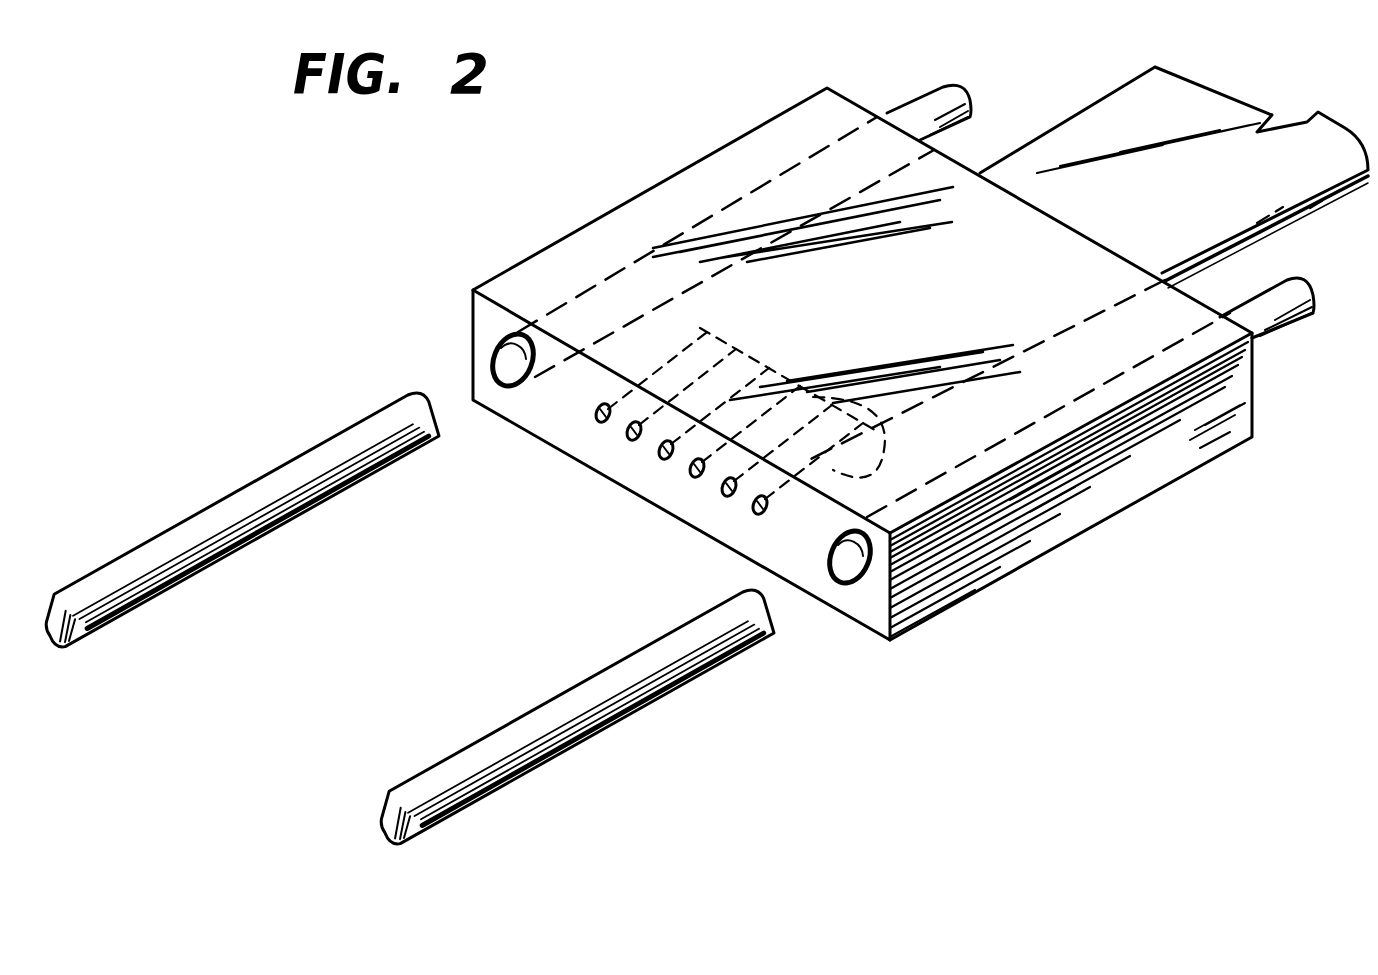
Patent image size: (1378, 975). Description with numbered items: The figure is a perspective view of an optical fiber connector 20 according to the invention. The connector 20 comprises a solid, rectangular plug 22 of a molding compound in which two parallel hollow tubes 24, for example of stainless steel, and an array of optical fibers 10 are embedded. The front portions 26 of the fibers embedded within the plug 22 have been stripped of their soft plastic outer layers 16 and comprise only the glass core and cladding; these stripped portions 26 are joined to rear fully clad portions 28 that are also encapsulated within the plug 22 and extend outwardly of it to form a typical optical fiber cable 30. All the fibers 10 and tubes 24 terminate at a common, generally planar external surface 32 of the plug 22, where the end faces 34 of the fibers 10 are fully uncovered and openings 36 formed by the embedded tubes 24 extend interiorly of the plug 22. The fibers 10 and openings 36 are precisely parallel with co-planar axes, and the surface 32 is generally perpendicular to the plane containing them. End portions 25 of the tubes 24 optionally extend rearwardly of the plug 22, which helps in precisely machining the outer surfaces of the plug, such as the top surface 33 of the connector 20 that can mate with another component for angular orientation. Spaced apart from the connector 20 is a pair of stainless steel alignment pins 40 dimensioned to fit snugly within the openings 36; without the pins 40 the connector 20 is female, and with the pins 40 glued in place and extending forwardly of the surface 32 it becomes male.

The optical fibers 10 is at (640, 434).
The outer layers 16 is at (773, 500).
The connector 20 is at (862, 389).
The plug 22 is at (930, 597).
The hollow tubes 24 is at (616, 266).
The end portions of the tubes 25 is at (932, 103).
The front portions of the fibers 26 is at (607, 398).
The rear portions of the fibers 28 is at (884, 476).
The optical fiber cable 30 is at (1333, 200).
The external surface 32 is at (858, 612).
The top surface 33 is at (762, 150).
The end faces 34 is at (703, 478).
The openings 36 is at (495, 372).
The alignment pins 40 is at (250, 495).